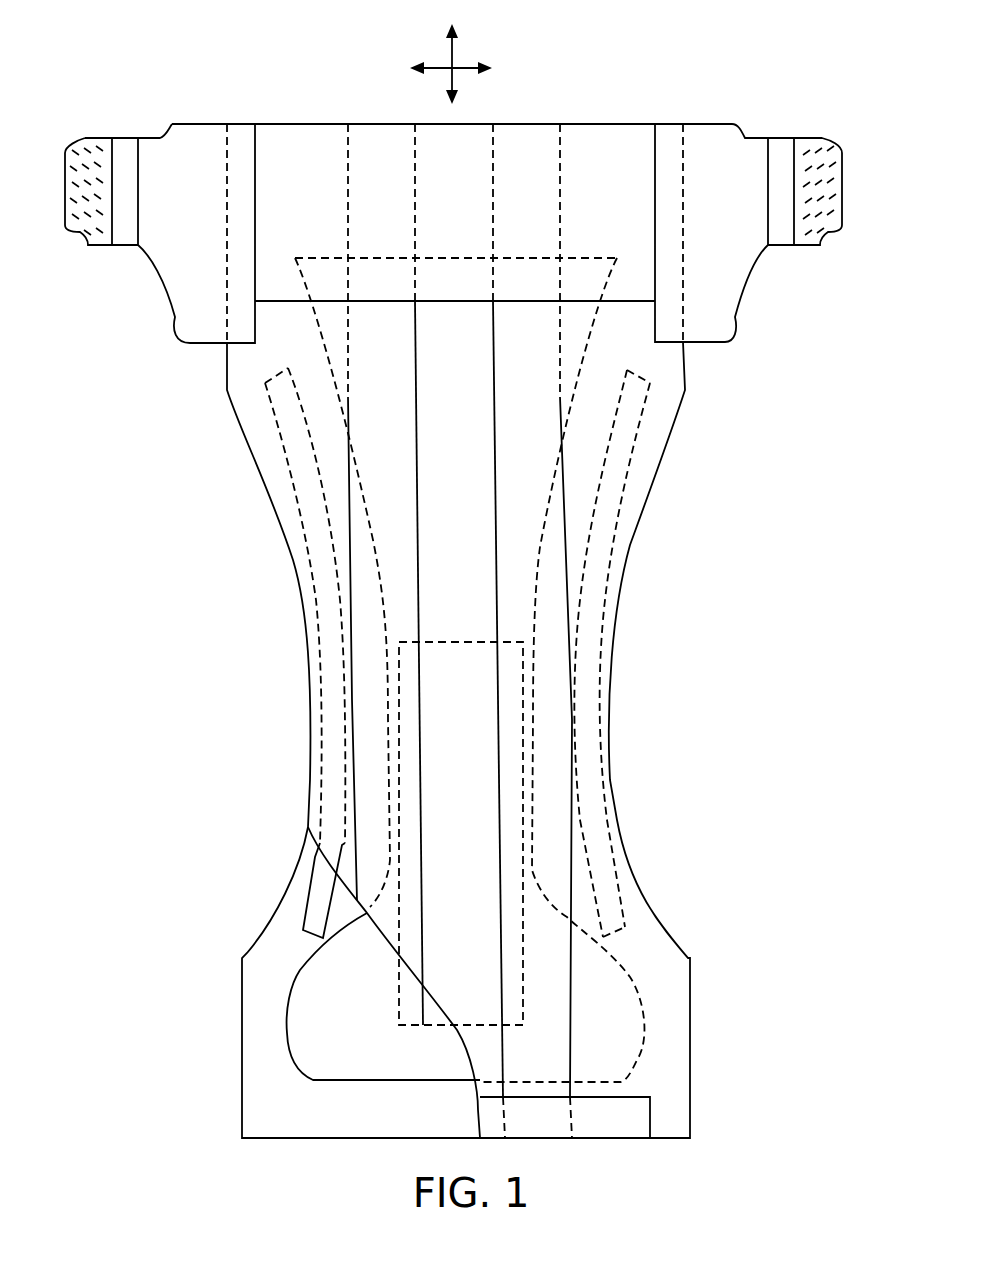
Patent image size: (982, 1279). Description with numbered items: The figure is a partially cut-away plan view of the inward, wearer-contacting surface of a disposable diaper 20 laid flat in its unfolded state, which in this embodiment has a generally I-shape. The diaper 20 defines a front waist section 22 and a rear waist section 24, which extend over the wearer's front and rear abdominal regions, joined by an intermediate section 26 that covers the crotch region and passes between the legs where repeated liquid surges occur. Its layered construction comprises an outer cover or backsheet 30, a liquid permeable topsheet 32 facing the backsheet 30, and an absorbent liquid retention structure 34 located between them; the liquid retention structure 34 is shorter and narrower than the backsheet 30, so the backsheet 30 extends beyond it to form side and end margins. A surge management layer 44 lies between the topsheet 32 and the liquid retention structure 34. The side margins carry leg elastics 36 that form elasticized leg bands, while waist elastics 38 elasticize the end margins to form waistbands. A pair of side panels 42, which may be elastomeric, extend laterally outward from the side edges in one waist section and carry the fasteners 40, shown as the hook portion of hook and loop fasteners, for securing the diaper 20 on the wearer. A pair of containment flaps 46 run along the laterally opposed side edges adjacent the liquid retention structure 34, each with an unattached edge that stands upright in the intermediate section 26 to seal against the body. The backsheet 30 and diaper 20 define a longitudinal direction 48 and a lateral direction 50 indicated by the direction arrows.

The disposable diaper 20 is at (813, 507).
The front waist section 22 is at (700, 930).
The rear waist section 24 is at (718, 392).
The intermediate section 26 is at (683, 692).
The backsheet 30 is at (252, 1028).
The topsheet 32 is at (372, 940).
The liquid retention structure 34 is at (287, 1043).
The leg elastics 36 is at (316, 900).
The waist elastics 38 is at (614, 157).
The fasteners 40 is at (97, 242).
The side panels 42 is at (172, 312).
The surge management layer 44 is at (403, 1015).
The containment flaps 46 is at (380, 470).
The longitudinal direction 48 is at (452, 52).
The lateral direction 50 is at (462, 72).